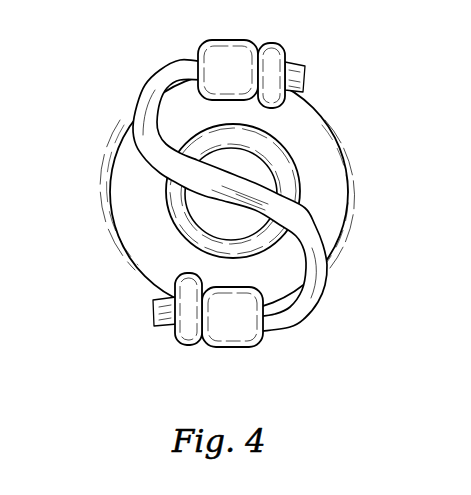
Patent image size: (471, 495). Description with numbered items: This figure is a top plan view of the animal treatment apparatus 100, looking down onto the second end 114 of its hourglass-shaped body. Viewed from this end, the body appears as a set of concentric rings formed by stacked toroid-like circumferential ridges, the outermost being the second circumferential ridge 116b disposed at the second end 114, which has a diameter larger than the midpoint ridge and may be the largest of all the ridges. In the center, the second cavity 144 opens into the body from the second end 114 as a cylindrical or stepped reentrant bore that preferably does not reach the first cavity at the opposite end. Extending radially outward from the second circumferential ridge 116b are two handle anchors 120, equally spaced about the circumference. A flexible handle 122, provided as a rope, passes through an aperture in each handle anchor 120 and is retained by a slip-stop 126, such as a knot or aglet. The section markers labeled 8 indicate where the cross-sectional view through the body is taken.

The animal treatment apparatus 100 is at (115, 113).
The second end 114 is at (146, 175).
The second circumferential ridge 116b is at (336, 203).
The handle anchor 120 is at (230, 330).
The flexible handle 122 is at (314, 290).
The slip-stop 126 is at (188, 330).
The second cavity 144 is at (187, 228).
The section line for FIG. 8 is at (122, 245).